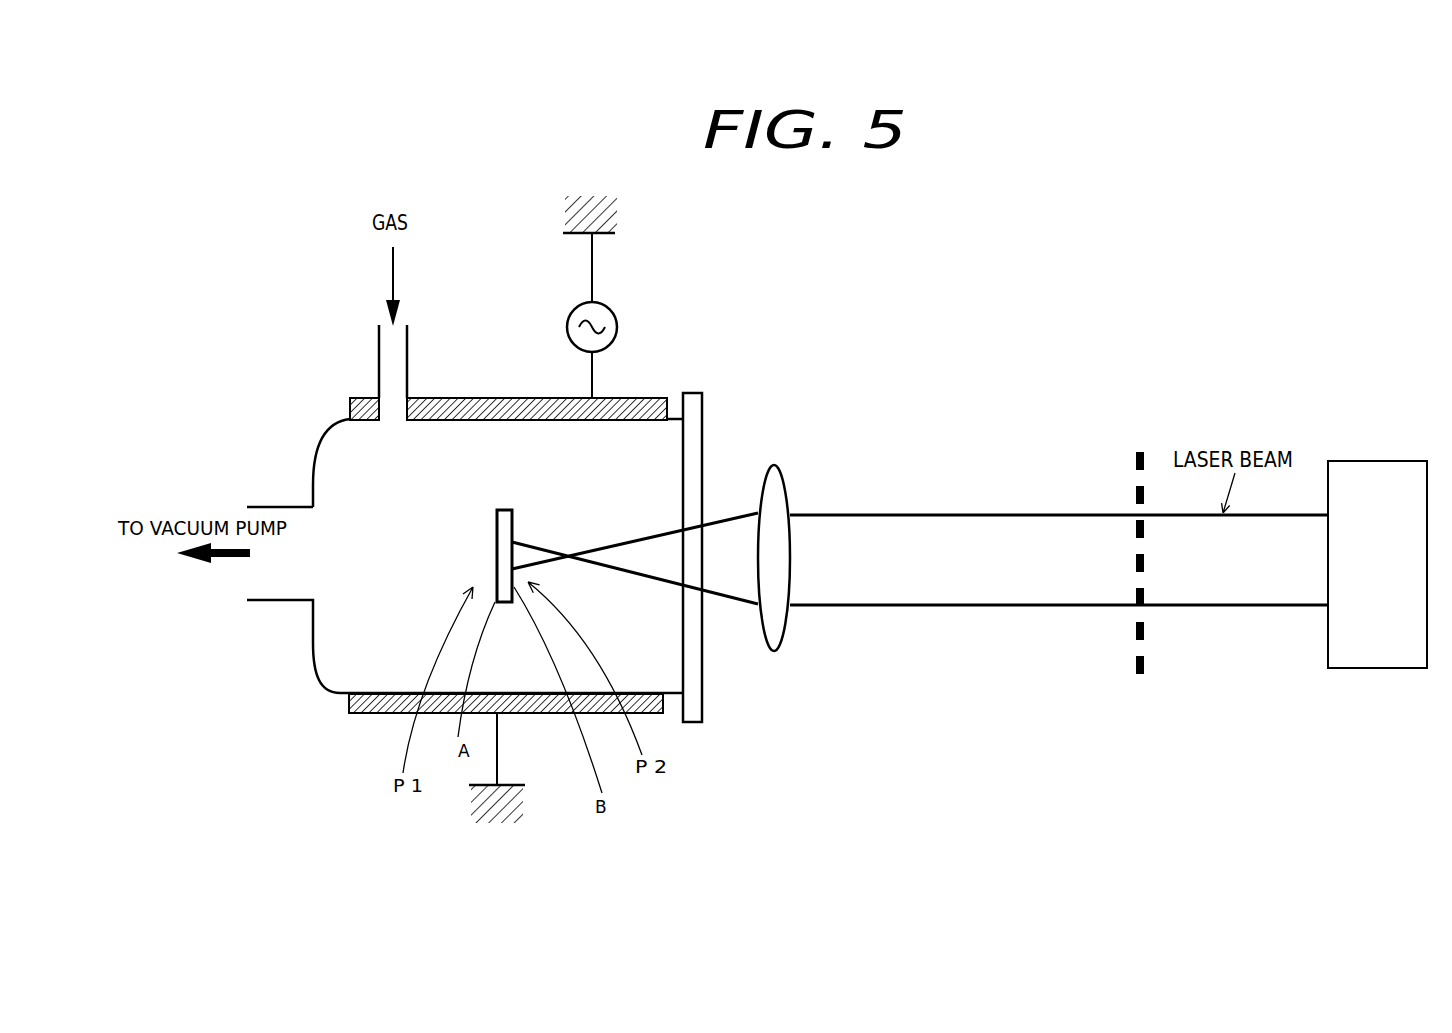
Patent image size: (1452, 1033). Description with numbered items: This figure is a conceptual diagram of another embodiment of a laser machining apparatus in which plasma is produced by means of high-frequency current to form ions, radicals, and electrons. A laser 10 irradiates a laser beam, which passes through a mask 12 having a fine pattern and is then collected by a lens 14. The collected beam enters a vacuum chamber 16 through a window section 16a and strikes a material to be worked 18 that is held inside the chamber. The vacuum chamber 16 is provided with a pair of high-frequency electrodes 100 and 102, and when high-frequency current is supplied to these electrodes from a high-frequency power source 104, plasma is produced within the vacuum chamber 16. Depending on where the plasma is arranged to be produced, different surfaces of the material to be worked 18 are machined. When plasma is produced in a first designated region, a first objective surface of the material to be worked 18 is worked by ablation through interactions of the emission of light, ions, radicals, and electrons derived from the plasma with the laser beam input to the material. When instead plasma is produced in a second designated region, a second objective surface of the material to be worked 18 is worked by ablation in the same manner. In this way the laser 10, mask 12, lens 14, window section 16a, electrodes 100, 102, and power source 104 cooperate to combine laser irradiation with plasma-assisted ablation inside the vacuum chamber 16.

The laser 10 is at (1357, 461).
The mask 12 is at (1143, 672).
The lens 14 is at (780, 628).
The vacuum chamber 16 is at (320, 675).
The window section 16a is at (700, 695).
The material to be worked 18 is at (508, 602).
The high-frequency electrode 100 is at (440, 398).
The high-frequency electrode 102 is at (372, 713).
The high-frequency power source 104 is at (607, 312).